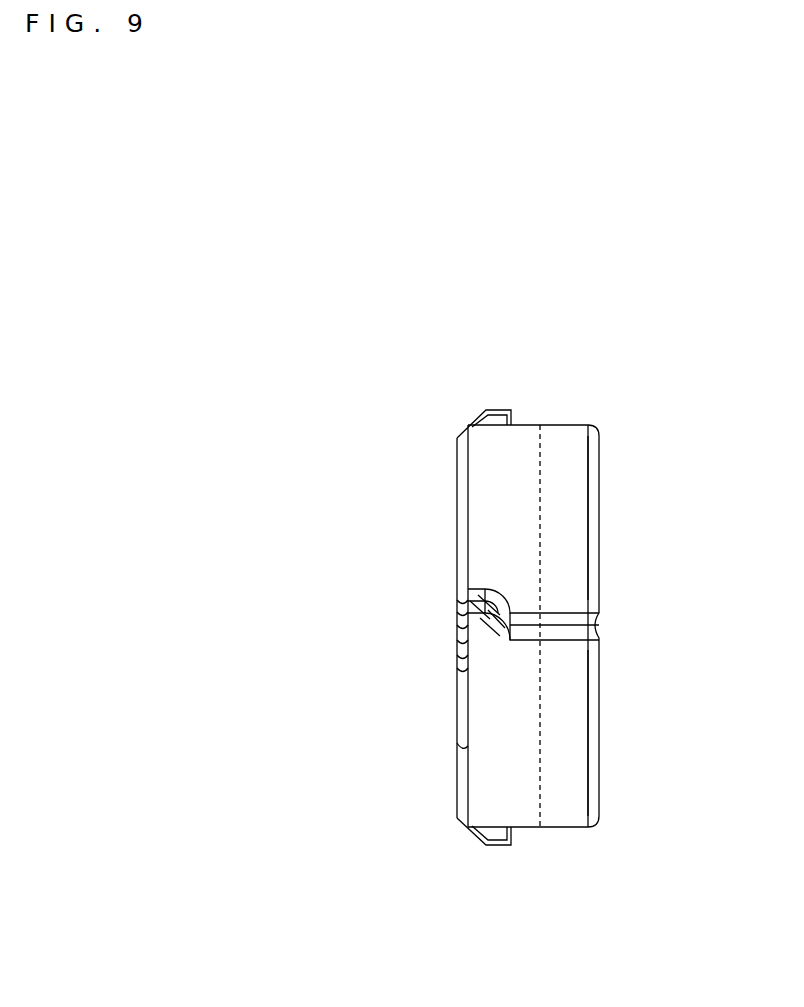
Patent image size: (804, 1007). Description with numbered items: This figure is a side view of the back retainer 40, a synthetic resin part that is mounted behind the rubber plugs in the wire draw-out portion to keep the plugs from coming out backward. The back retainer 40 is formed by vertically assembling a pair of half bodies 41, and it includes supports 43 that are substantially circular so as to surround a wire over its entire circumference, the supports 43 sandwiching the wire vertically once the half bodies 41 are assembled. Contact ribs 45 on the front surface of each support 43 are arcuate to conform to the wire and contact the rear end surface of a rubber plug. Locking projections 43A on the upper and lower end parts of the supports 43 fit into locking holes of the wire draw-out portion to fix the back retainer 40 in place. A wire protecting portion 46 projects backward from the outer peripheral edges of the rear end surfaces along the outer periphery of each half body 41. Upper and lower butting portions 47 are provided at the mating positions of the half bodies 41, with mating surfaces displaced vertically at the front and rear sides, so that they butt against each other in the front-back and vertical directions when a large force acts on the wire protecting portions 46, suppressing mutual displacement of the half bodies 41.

The back retainer 40 is at (612, 376).
The half body 41 is at (539, 387).
The support 43 is at (493, 770).
The locking projection 43A is at (497, 417).
The contact rib 45 is at (462, 513).
The wire protecting portion 46 is at (573, 514).
The butting portion 47 is at (527, 603).